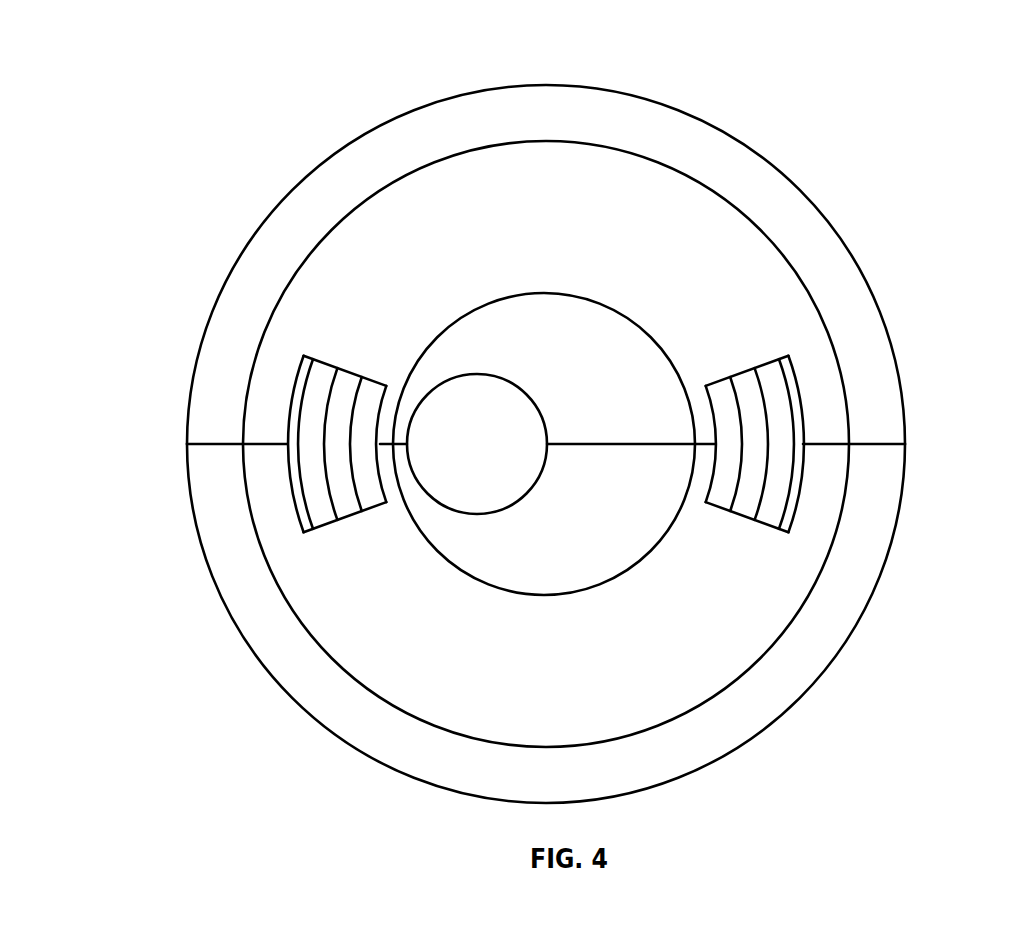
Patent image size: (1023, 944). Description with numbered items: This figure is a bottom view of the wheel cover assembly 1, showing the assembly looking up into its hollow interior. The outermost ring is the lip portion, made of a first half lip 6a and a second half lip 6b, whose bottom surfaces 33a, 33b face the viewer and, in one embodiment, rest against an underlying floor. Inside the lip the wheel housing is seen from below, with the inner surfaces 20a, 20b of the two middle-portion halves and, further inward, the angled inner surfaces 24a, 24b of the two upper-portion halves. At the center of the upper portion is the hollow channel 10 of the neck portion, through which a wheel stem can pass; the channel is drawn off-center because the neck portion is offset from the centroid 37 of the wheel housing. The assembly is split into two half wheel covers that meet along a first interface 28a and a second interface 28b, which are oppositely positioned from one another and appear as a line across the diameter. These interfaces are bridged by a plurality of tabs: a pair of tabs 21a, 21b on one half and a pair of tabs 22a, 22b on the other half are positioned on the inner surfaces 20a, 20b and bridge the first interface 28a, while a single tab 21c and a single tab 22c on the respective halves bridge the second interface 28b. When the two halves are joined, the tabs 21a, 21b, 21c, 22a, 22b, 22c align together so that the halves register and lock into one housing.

The wheel cover assembly 1 is at (151, 148).
The first half lip 6a is at (758, 170).
The second half lip 6b is at (880, 503).
The hollow channel 10 is at (485, 427).
The inner surface of first half middle portion 20a is at (627, 213).
The inner surface of second half middle portion 20b is at (407, 640).
The tab 21a is at (723, 395).
The tab 21b is at (780, 383).
The tab 21c is at (750, 383).
The tab 22a is at (368, 398).
The tab 22b is at (320, 382).
The tab 22c is at (343, 387).
The angled inner surface 24a is at (597, 378).
The angled inner surface 24b is at (658, 504).
The first interface 28a is at (875, 444).
The second interface 28b is at (215, 445).
The bottom surface 33a is at (580, 131).
The bottom surface 33b is at (582, 790).
The centroid 37 is at (548, 444).